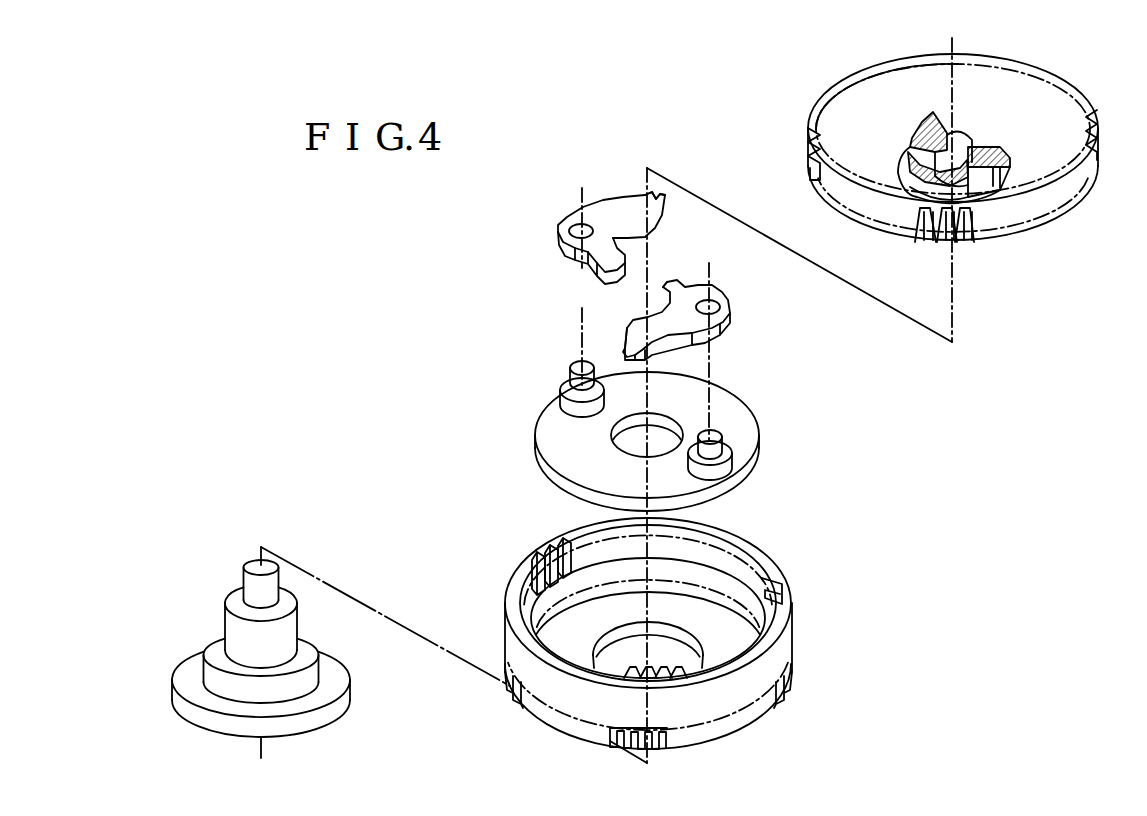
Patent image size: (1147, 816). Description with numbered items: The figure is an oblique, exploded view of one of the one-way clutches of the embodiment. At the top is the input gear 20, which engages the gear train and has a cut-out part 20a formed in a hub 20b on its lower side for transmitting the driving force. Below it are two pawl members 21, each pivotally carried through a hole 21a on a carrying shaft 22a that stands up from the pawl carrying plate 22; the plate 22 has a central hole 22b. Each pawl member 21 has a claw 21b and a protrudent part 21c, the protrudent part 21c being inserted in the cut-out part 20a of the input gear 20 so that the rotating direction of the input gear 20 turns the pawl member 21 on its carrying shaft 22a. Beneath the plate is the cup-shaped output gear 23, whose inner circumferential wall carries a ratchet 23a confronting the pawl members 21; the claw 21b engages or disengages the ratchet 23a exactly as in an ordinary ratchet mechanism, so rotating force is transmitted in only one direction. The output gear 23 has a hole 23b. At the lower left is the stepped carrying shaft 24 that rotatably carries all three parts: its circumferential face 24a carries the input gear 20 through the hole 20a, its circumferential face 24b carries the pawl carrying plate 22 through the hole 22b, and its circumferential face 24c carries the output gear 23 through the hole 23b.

The input gear 20 is at (1052, 118).
The cut-out part 20a is at (917, 149).
The hub of ratchet wheel 20b is at (963, 135).
The pawl member 21 is at (597, 215).
The hole 21a is at (572, 228).
The claw 21b is at (658, 196).
The protrudent part 21c is at (625, 247).
The pawl carrying plate 22 is at (735, 410).
The carrying shaft 22a is at (565, 378).
The hole 22b is at (625, 445).
The output gear 23 is at (782, 648).
The ratchet 23a is at (545, 550).
The hole 23b is at (672, 635).
The carrying shaft 24 is at (332, 712).
The circumferential face 24a is at (248, 578).
The circumferential face 24b is at (235, 630).
The circumferential face 24c is at (217, 675).